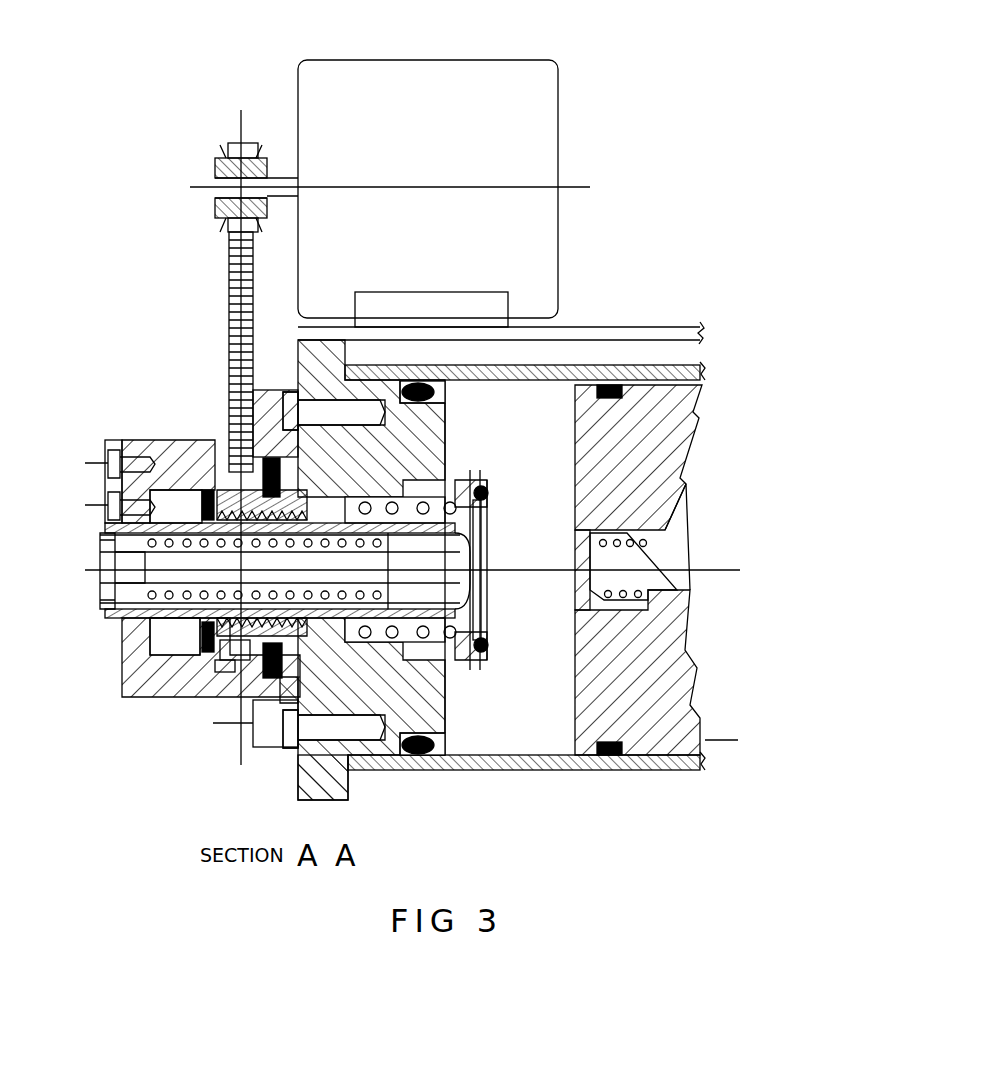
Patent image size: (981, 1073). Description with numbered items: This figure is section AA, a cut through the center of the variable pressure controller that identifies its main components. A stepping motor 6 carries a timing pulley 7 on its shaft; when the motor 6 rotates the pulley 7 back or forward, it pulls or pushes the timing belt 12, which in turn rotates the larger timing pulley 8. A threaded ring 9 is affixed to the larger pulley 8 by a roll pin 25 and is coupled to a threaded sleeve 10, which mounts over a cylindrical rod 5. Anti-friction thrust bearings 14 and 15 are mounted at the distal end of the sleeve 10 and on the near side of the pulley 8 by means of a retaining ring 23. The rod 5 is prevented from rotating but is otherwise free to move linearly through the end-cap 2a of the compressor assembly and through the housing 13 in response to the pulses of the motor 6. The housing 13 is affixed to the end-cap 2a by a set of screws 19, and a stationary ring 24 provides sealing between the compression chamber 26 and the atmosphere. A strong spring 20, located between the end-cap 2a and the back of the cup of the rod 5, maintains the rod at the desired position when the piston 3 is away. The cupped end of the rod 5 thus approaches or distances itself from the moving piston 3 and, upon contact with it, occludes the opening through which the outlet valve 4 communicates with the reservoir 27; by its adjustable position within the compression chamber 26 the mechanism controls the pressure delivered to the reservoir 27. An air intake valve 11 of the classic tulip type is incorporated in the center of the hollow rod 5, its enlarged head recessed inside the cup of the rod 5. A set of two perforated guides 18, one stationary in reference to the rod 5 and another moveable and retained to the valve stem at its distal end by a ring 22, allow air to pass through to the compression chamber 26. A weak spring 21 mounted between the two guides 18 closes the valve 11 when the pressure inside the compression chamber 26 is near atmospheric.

The end-cap 2a is at (332, 778).
The piston 3 is at (638, 457).
The outlet valve 4 is at (650, 522).
The cylindrical rod 5 is at (488, 472).
The stepping motor 6 is at (323, 120).
The timing pulley 7 is at (207, 153).
The larger timing pulley 8 is at (222, 677).
The threaded ring 9 is at (213, 660).
The threaded sleeve 10 is at (300, 632).
The air intake valve 11 is at (492, 556).
The timing belt 12 is at (266, 455).
The housing 13 is at (186, 438).
The anti-friction thrust bearing 14 is at (260, 683).
The anti-friction thrust bearing 15 is at (192, 647).
The perforated guides 18 is at (543, 666).
The screws 19 is at (262, 750).
The strong spring 20 is at (414, 600).
The weak spring 21 is at (166, 537).
The ring 22 is at (110, 609).
The retaining ring 23 is at (122, 618).
The stationary ring 24 is at (238, 380).
The roll pin 25 is at (238, 488).
The compression chamber 26 is at (626, 568).
The reservoir 27 is at (741, 742).